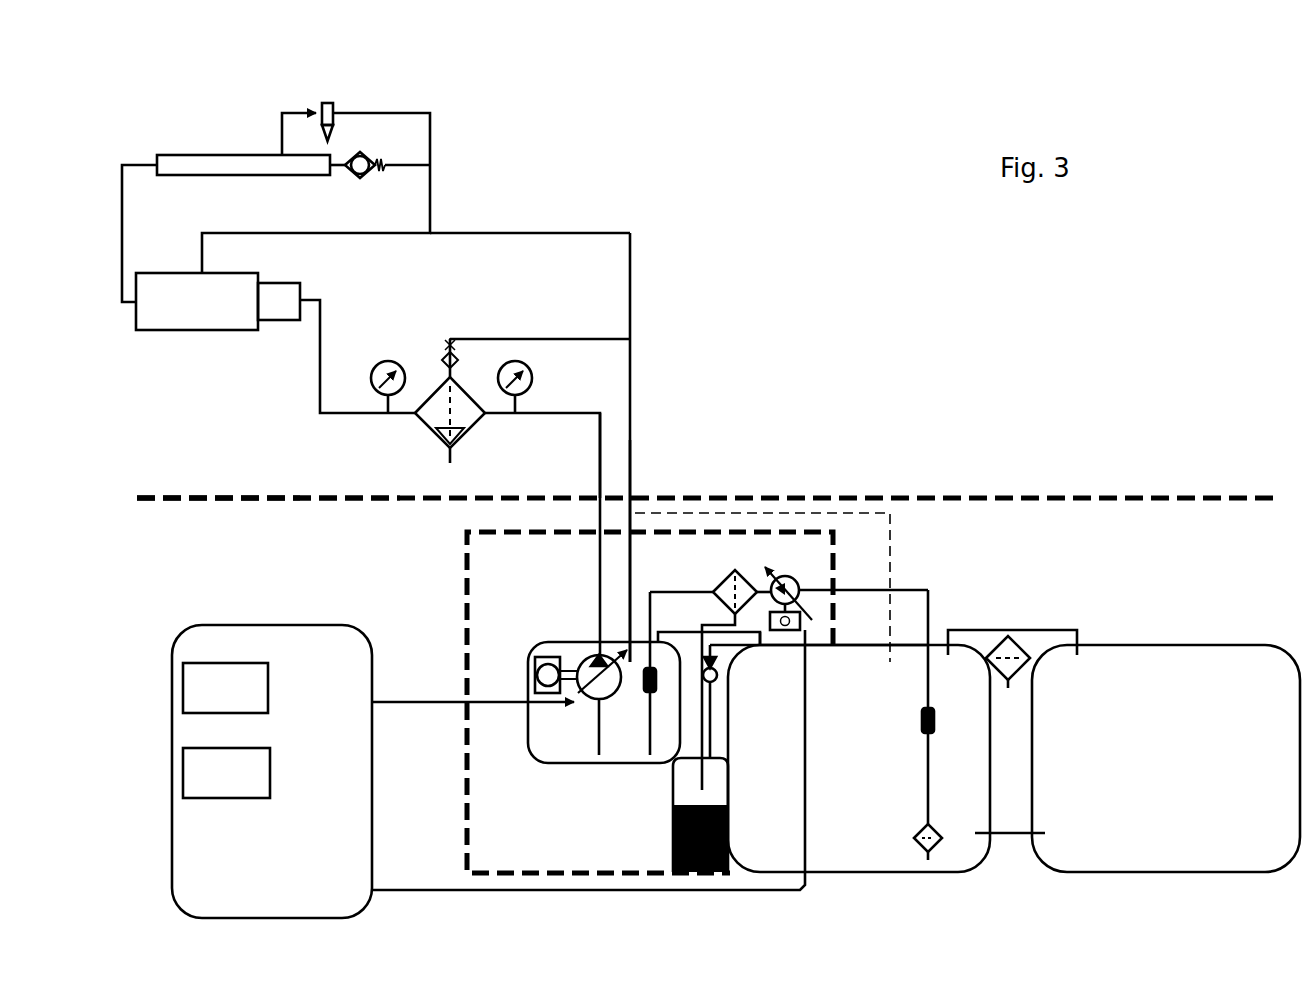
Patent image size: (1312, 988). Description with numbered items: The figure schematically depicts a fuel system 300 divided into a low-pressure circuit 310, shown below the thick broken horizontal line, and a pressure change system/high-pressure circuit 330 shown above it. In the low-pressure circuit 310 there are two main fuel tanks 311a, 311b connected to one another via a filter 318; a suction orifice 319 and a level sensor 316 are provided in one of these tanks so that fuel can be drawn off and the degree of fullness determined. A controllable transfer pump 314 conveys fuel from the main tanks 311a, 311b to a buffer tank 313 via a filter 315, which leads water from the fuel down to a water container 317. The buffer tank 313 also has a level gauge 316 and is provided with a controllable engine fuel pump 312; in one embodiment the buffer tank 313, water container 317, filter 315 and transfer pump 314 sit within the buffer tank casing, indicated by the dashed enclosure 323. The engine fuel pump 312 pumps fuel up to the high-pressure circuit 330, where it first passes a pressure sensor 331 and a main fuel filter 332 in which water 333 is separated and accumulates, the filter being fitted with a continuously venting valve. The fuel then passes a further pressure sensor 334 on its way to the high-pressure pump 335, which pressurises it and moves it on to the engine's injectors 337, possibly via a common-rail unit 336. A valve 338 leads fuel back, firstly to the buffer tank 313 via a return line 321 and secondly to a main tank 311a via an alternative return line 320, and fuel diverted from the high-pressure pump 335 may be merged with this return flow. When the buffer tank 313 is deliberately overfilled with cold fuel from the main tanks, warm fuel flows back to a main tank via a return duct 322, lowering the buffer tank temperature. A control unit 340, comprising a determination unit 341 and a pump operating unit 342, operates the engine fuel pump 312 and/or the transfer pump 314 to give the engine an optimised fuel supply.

The fuel system 300 is at (903, 281).
The low-pressure circuit 310 is at (218, 525).
The main fuel tank 311a is at (859, 758).
The main fuel tank 311b is at (1166, 758).
The engine fuel pump 312 is at (594, 702).
The buffer tank 313 is at (604, 725).
The transfer pump 314 is at (842, 586).
The filter 315 is at (703, 666).
The level sensor 316 is at (665, 685).
The water container 317 is at (674, 758).
The filter 318 is at (1012, 643).
The suction orifice 319 is at (907, 833).
The alternative return line 320 is at (892, 543).
The return line 321 is at (638, 550).
The return duct 322 is at (762, 660).
The pump unit boundary 323 is at (650, 702).
The pressure change system/high-pressure circuit 330 is at (268, 472).
The pressure sensor 331 is at (544, 385).
The main fuel filter 332 is at (535, 455).
The water 333 is at (436, 400).
The pressure sensor 334 is at (380, 374).
The high-pressure pump 335 is at (218, 319).
The common-rail unit 336 is at (243, 150).
The injectors 337 is at (360, 126).
The valve 338 is at (375, 183).
The control unit 340 is at (272, 771).
The determination unit 341 is at (225, 688).
The pump operating unit 342 is at (226, 773).